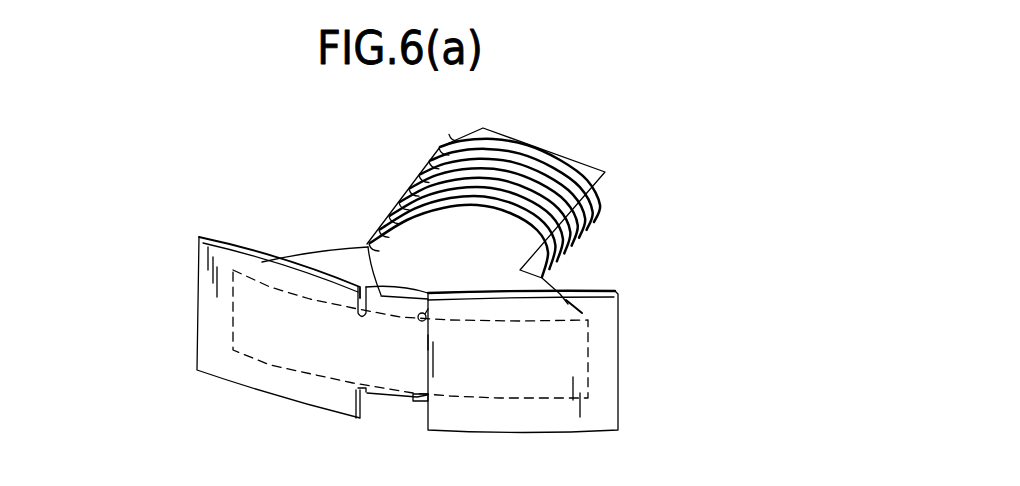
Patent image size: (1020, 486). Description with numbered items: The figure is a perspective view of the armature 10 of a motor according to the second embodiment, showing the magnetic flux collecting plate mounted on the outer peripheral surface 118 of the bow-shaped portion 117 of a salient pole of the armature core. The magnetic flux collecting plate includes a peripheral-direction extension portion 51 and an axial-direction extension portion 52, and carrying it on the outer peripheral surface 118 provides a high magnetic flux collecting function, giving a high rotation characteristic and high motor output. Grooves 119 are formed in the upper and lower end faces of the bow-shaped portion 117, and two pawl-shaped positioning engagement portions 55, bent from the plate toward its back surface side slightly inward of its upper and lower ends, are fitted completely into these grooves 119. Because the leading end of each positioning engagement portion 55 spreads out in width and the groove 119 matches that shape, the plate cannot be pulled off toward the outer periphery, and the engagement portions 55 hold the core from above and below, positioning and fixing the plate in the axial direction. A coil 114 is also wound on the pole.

The armature 10 is at (184, 215).
The peripheral-direction extension portion 51 is at (216, 238).
The axial-direction extension portion 52 is at (252, 278).
The positioning engagement portion 55 is at (408, 305).
The coil winding 114 is at (538, 132).
The bow-shaped portion 117 is at (313, 265).
The outer peripheral surface 118 is at (295, 353).
The groove 119 is at (366, 248).